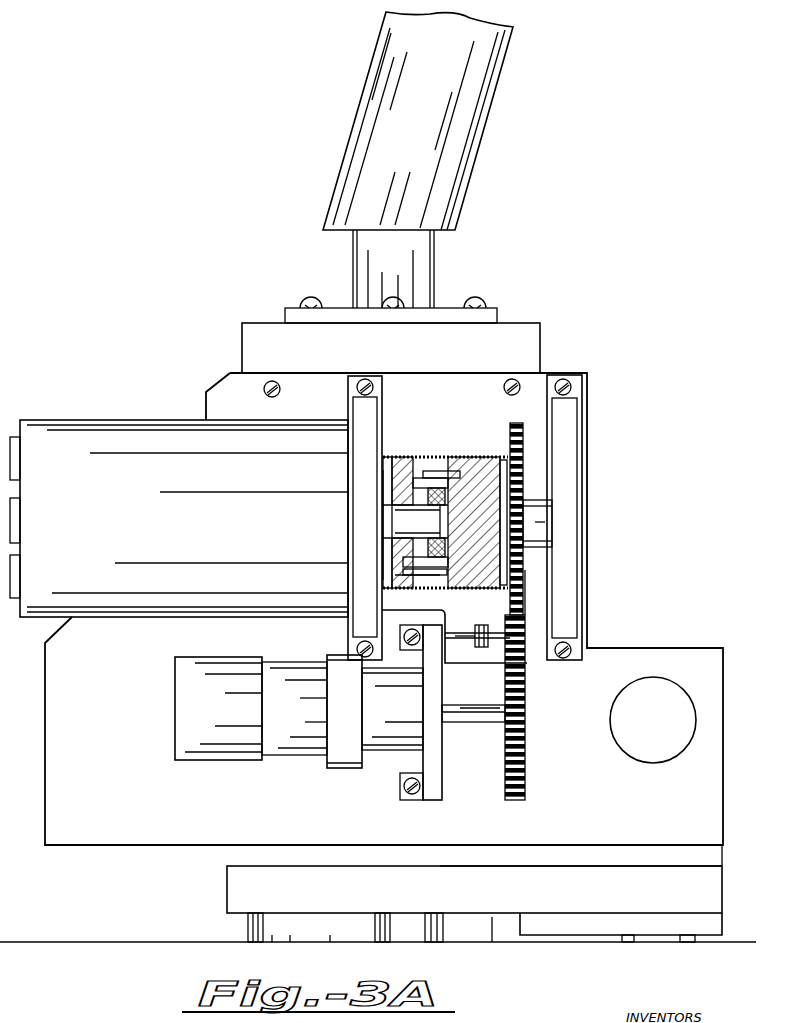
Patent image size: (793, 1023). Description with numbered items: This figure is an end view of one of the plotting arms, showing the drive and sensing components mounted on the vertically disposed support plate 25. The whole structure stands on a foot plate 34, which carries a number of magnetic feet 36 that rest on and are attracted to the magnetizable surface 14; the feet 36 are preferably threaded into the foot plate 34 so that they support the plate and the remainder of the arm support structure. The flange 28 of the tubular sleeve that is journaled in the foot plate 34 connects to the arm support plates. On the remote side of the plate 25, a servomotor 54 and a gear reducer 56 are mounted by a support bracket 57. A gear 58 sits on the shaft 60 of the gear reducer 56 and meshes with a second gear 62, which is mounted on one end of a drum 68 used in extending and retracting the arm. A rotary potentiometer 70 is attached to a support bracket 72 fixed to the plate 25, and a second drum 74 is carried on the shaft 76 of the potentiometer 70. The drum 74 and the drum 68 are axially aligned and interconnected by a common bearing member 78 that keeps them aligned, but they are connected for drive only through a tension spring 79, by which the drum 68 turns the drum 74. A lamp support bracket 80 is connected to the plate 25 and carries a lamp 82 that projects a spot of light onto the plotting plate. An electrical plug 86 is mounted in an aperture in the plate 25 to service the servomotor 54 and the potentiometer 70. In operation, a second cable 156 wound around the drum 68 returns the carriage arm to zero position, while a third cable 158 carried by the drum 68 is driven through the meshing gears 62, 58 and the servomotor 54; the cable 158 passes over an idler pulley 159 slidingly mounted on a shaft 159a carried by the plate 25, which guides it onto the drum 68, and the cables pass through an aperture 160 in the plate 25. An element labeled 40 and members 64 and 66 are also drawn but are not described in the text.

The magnetizable surface 14 is at (142, 940).
The support plate 25 is at (207, 381).
The flange 28 is at (540, 857).
The foot plate 34 is at (237, 878).
The magnetic feet 36 is at (250, 926).
The mounting block 40 is at (500, 921).
The servomotor 54 is at (250, 681).
The gear reducer 56 is at (395, 725).
The support bracket 57 is at (430, 796).
The gear 58 is at (525, 750).
The shaft 60 is at (490, 722).
The second gear 62 is at (514, 439).
The gear shaft 64 is at (550, 512).
The support bar 66 is at (570, 420).
The drum 68 is at (486, 457).
The rotary potentiometer 70 is at (106, 436).
The support bracket 72 is at (382, 390).
The second drum 74 is at (420, 443).
The shaft 76 is at (421, 528).
The common bearing member 78 is at (438, 478).
The tension spring 79 is at (438, 586).
The lamp support bracket 80 is at (540, 326).
The lamp 82 is at (460, 168).
The electrical plug 86 is at (680, 710).
The second cable 156 is at (383, 577).
The third cable 158 is at (437, 472).
The idler pulley 159 is at (470, 638).
The shaft 159a is at (462, 645).
The aperture 160 is at (447, 613).